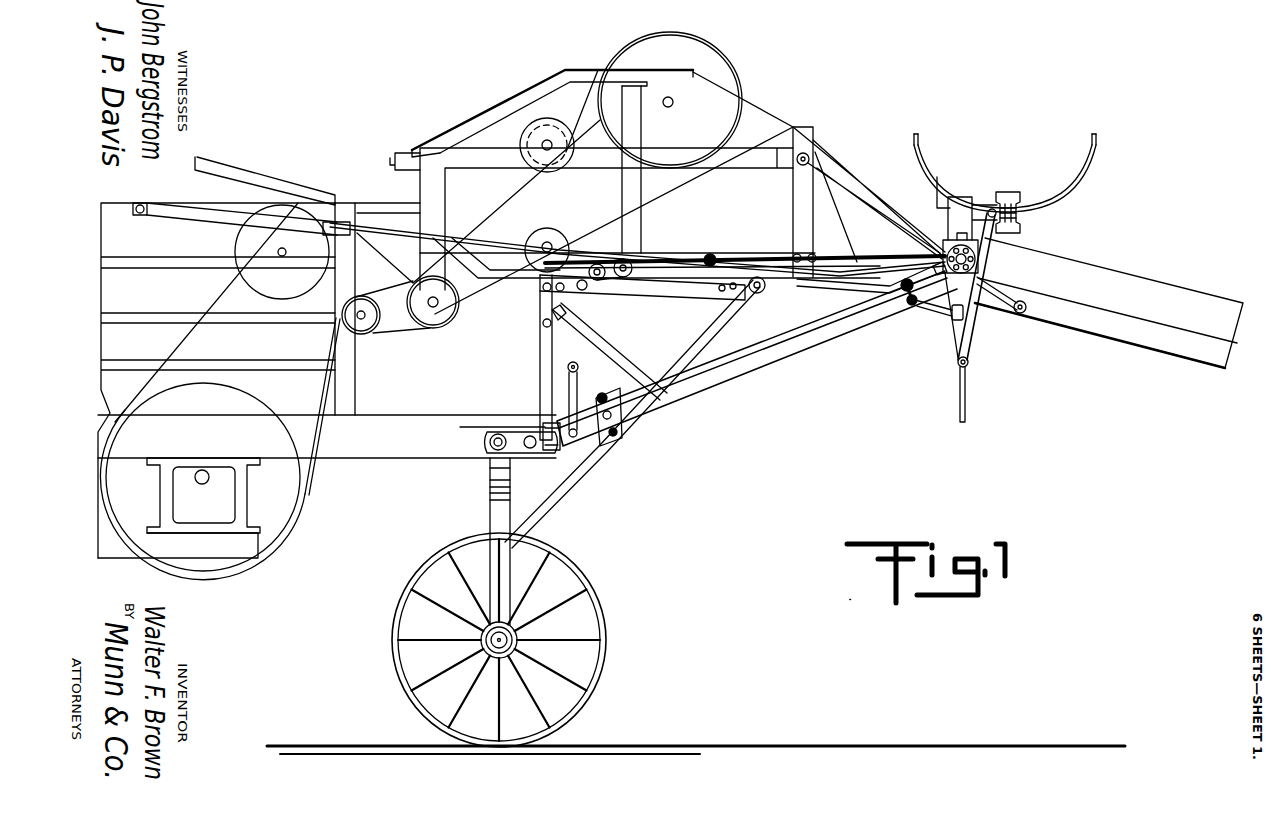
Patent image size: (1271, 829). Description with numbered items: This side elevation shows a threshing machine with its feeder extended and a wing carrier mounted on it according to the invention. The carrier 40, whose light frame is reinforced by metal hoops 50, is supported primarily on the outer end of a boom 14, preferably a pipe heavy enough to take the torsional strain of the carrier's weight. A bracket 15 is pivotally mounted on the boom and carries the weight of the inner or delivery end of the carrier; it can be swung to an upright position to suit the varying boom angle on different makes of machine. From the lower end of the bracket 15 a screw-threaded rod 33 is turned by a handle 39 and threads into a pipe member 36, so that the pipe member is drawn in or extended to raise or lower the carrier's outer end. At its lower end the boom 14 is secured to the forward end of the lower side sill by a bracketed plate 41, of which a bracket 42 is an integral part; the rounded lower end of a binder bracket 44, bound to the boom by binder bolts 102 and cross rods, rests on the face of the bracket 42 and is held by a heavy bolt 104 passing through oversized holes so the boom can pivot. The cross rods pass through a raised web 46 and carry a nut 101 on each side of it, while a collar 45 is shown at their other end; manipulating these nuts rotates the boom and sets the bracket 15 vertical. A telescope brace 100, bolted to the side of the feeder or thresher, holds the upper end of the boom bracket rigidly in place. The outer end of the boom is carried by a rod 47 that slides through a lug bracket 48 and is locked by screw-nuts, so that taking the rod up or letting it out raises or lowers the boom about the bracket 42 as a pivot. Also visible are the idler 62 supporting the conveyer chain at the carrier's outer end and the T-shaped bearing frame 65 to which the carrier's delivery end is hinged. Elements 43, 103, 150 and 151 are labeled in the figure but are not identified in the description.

The boom 14 is at (755, 365).
The bracket 15 is at (937, 195).
The screw-threaded rod 33 is at (975, 337).
The pipe member 36 is at (985, 260).
The handle 39 is at (968, 392).
The carrier 40 is at (928, 162).
The bracketed plate 41 is at (492, 458).
The bracket 42 is at (560, 470).
The pivot 43 is at (630, 435).
The binder bracket 44 is at (583, 400).
The collar 45 is at (603, 452).
The raised web 46 is at (572, 395).
The rod 47 is at (808, 278).
The lug bracket 48 is at (357, 222).
The metal hoops 50 is at (918, 147).
The idler 62 is at (1020, 222).
The T-shaped bearing frame 65 is at (945, 213).
The telescope brace 100 is at (656, 287).
The nut 101 is at (572, 364).
The binder bolts 102 is at (610, 383).
The clamp 103 is at (652, 430).
The heavy bolt 104 is at (552, 455).
The pulley 150 is at (552, 232).
The belt 151 is at (712, 257).